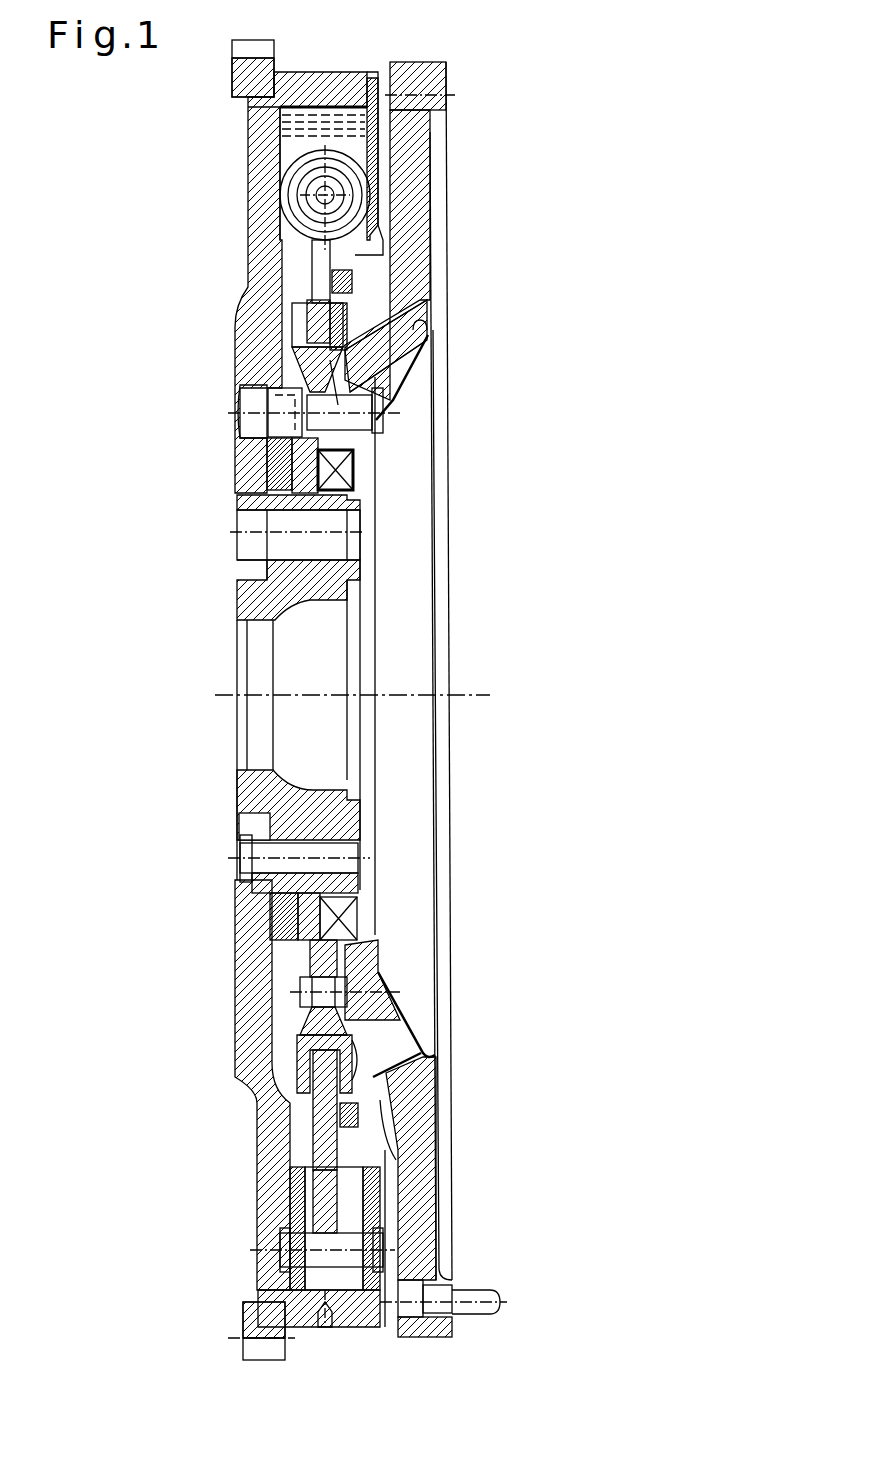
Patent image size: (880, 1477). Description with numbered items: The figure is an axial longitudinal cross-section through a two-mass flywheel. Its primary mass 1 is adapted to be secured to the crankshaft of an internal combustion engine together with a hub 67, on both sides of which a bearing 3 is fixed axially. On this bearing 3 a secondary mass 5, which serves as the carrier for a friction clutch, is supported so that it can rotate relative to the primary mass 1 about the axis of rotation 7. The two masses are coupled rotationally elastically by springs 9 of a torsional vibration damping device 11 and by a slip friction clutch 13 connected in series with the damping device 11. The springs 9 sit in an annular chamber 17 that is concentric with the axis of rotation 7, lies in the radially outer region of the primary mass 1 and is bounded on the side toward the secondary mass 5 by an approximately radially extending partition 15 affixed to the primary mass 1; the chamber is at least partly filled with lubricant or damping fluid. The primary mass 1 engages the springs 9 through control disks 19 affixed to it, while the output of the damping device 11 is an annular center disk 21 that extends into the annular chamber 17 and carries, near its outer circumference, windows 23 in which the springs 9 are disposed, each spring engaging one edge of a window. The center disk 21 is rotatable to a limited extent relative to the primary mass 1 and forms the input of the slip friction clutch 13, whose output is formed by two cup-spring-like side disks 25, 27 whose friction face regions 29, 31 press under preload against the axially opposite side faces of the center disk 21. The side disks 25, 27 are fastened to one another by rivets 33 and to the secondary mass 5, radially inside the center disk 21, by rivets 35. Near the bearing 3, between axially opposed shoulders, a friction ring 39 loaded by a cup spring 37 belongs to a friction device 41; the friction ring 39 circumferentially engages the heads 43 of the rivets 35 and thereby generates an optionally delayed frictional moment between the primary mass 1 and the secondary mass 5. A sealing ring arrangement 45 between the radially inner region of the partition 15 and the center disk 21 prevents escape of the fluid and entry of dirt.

The primary mass 1 is at (262, 221).
The bearing 3 is at (340, 482).
The secondary mass 5 is at (410, 318).
The axis of rotation 7 is at (412, 695).
The springs 9 is at (367, 157).
The torsional vibration damping device 11 is at (282, 188).
The slip friction clutch 13 is at (358, 337).
The partition 15 is at (350, 182).
The annular chamber 17 is at (320, 110).
The control disks 19 is at (285, 1200).
The center disk 21 is at (300, 312).
The windows 23 is at (300, 265).
The side disk 25 is at (343, 362).
The side disk 27 is at (300, 372).
The friction face region 29 is at (337, 318).
The friction face region 31 is at (300, 345).
The rivets 33 is at (325, 1000).
The rivets 35 is at (385, 415).
The cup spring 37 is at (270, 525).
The friction ring 39 is at (258, 497).
The friction device 41 is at (262, 462).
The rivet heads 43 is at (240, 428).
The sealing ring arrangement 45 is at (355, 280).
The hub 67 is at (245, 612).